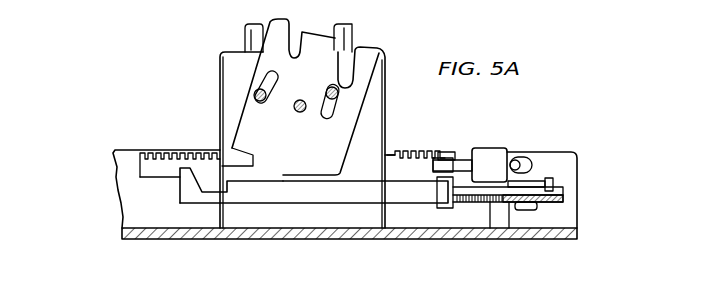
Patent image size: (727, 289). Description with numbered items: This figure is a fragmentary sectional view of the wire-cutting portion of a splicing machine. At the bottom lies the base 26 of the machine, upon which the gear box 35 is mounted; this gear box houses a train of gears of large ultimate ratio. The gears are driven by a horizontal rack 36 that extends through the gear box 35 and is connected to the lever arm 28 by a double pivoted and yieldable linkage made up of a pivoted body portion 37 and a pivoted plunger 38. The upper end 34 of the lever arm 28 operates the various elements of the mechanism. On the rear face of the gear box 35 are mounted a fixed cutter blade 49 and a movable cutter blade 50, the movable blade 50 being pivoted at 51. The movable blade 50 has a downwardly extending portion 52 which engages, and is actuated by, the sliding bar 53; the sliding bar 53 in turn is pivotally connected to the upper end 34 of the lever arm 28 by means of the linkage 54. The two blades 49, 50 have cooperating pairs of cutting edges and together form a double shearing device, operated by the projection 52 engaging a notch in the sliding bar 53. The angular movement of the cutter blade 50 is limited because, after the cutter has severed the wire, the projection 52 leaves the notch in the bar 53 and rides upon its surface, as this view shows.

The base 26 is at (182, 238).
The lever arm 28 is at (553, 188).
The upper end of the lever arm 34 is at (557, 198).
The gear box 35 is at (221, 78).
The horizontal rack 36 is at (418, 154).
The pivoted body portion 37 is at (494, 152).
The pivoted plunger 38 is at (462, 163).
The fixed cutter blade 49 is at (353, 39).
The movable cutter blade 50 is at (366, 90).
The pivot 51 is at (305, 112).
The downwardly extending portion 52 is at (266, 176).
The sliding bar 53 is at (367, 197).
The linkage 54 is at (474, 192).